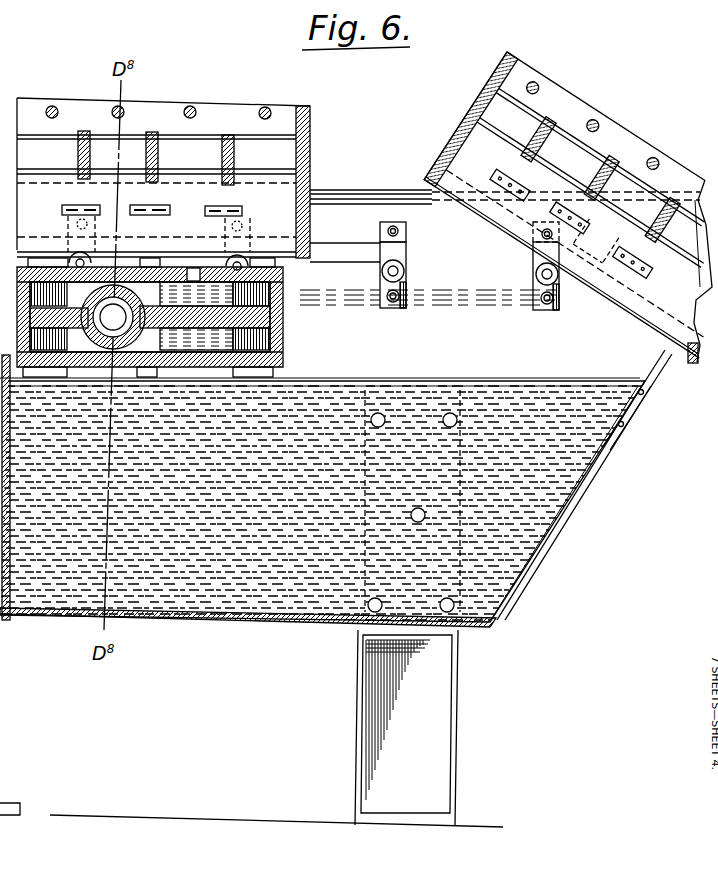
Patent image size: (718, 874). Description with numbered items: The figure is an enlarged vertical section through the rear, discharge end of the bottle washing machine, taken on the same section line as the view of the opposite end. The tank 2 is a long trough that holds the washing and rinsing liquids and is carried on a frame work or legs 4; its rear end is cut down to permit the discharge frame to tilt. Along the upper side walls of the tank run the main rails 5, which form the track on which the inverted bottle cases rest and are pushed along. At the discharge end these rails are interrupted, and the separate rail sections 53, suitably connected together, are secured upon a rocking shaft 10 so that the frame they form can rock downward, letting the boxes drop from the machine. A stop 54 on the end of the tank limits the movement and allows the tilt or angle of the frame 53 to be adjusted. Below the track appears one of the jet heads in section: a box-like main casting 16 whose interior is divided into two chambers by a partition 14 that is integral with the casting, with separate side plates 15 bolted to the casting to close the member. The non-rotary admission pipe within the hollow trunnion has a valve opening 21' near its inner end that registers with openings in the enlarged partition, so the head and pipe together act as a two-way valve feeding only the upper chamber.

The tank 2 is at (188, 622).
The frame work or legs 4 is at (276, 728).
The main rails 5 is at (352, 268).
The rocking shaft 10 is at (544, 273).
The partition 14 is at (283, 319).
The side plates 15 is at (283, 362).
The main casting 16 is at (283, 342).
The valve opening 21' is at (196, 342).
The rail sections 53 is at (621, 309).
The stop 54 is at (656, 376).